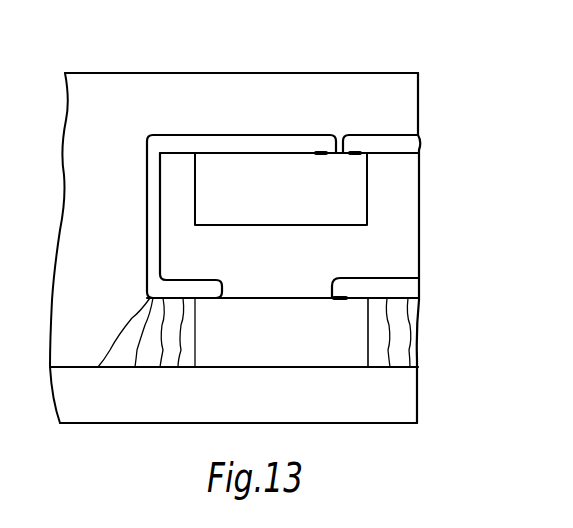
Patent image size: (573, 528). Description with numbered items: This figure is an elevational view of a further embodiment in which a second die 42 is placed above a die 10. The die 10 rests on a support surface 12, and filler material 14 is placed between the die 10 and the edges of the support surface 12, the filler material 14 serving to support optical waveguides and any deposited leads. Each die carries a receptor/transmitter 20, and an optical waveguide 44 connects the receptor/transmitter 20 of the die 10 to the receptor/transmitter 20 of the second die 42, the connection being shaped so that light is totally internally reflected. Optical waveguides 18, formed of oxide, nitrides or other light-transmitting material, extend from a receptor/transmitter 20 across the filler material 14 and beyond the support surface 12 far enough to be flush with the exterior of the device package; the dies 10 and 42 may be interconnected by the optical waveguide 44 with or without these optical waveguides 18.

The die 10 is at (292, 347).
The support surface 12 is at (284, 418).
The filler material 14 is at (405, 308).
The optical waveguide 18 is at (418, 140).
The photo emitting site or receptor 20 is at (352, 154).
The second die 42 is at (285, 211).
The optical waveguide 44 is at (268, 140).